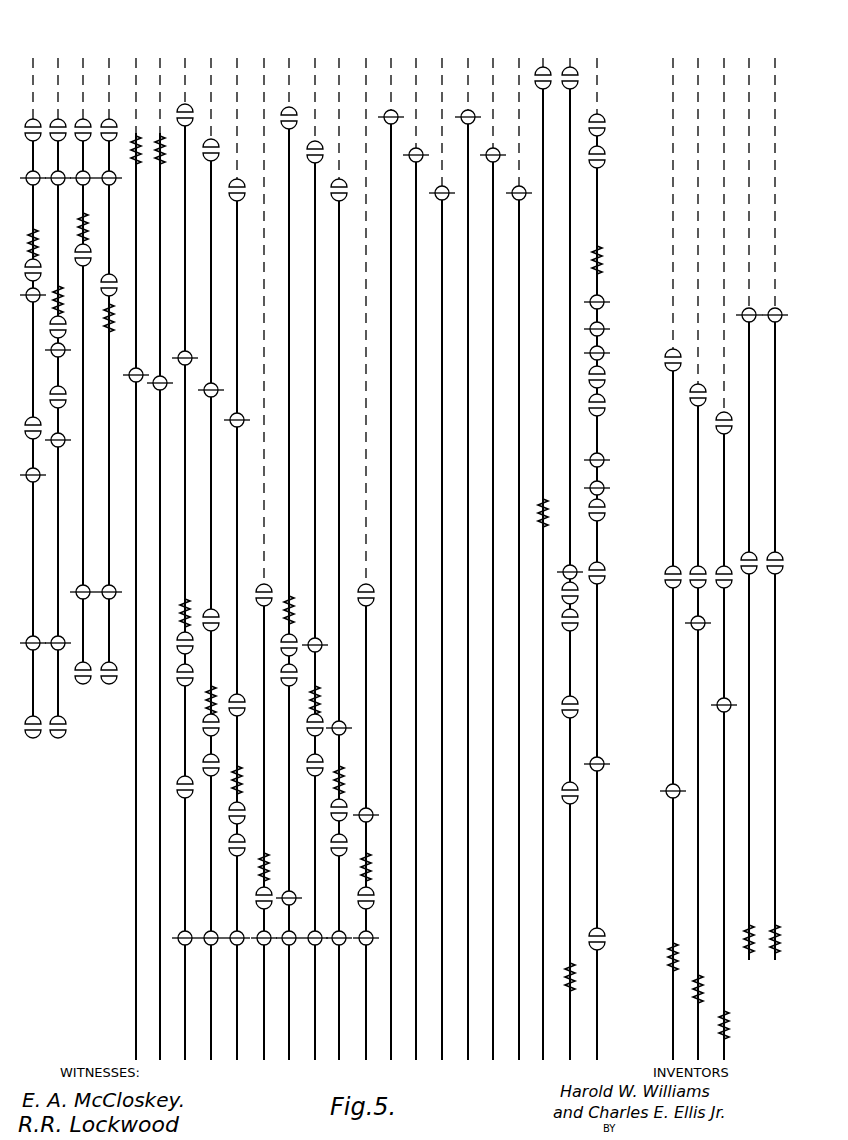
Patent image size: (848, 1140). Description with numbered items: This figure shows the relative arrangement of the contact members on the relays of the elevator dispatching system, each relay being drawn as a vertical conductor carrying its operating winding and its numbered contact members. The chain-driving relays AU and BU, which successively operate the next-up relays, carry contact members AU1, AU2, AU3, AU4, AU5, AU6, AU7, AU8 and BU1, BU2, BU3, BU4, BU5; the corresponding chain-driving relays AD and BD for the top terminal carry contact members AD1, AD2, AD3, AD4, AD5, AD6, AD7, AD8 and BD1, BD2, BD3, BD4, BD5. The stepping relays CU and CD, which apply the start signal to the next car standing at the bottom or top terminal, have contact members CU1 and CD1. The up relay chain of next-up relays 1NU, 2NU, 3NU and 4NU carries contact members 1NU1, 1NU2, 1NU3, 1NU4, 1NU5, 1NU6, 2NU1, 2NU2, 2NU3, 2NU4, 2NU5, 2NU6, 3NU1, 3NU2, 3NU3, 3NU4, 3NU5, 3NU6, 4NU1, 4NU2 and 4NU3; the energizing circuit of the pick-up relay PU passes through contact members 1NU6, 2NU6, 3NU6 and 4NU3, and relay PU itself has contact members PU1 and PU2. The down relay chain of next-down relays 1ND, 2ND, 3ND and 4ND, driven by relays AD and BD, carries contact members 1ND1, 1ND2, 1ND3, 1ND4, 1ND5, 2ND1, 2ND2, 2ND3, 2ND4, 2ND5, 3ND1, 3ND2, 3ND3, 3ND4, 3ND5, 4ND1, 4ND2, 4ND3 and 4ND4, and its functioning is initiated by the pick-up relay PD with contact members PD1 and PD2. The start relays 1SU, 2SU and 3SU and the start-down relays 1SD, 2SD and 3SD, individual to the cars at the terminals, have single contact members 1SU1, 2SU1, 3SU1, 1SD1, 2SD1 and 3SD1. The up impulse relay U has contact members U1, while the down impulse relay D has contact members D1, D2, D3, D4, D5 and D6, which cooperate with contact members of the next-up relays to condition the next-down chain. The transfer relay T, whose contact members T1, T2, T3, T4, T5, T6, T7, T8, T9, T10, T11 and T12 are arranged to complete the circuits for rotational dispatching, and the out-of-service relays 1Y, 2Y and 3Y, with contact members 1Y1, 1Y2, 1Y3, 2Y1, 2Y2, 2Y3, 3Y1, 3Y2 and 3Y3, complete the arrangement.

The chain-driving relay AU is at (27, 380).
The chain-driving relay AD is at (53, 380).
The chain-driving relay BU is at (78, 353).
The chain-driving relay BD is at (103, 353).
The stepping relay CU is at (130, 541).
The stepping relay CD is at (154, 541).
The next-up relay 1NU is at (179, 536).
The next-up relay 2NU is at (205, 536).
The next-up relay 3NU is at (231, 536).
The next-up relay 4NU is at (258, 536).
The next-down relay 1ND is at (283, 536).
The next-down relay 2ND is at (310, 536).
The next-down relay 3ND is at (334, 536).
The next-down relay 4ND is at (361, 536).
The start relay 1SU is at (385, 537).
The start relay 2SU is at (410, 537).
The start relay 3SU is at (436, 537).
The start-down relay 1SD is at (462, 536).
The start-down relay 2SD is at (487, 536).
The start-down relay 3SD is at (513, 536).
The up impulse relay U is at (536, 546).
The down impulse relay D is at (564, 546).
The transfer relay T is at (591, 546).
The out-of-service relay 1Y is at (667, 541).
The out-of-service relay 2Y is at (692, 541).
The out-of-service relay 3Y is at (718, 541).
The pick-up relay PU is at (743, 492).
The pick-up relay PD is at (769, 491).
The contact members of chain-driving relay AU AU1 is at (25, 123).
The contact members of chain-driving relay AU AU2 is at (27, 173).
The contact members of chain-driving relay AU AU3 is at (25, 273).
The contact members of chain-driving relay AU AU4 is at (27, 307).
The contact members of chain-driving relay AU AU5 is at (25, 424).
The contact members of chain-driving relay AU AU6 is at (27, 469).
The contact members of chain-driving relay AU AU7 is at (27, 636).
The contact members of chain-driving relay AU AU8 is at (25, 723).
The contact members of chain-driving relay AD AD1 is at (50, 124).
The contact members of chain-driving relay AD AD2 is at (52, 187).
The contact members of chain-driving relay AD AD3 is at (61, 322).
The contact members of chain-driving relay AD AD4 is at (52, 345).
The contact members of chain-driving relay AD AD5 is at (50, 397).
The contact members of chain-driving relay AD AD6 is at (52, 450).
The contact members of chain-driving relay AD AD7 is at (52, 632).
The contact members of chain-driving relay AD AD8 is at (50, 722).
The contact members of chain-driving relay BU BU1 is at (75, 123).
The contact members of chain-driving relay BU BU2 is at (77, 180).
The contact members of chain-driving relay BU BU3 is at (75, 259).
The contact members of chain-driving relay BU BU4 is at (77, 590).
The contact members of chain-driving relay BU BU5 is at (75, 670).
The contact members of chain-driving relay BD BD1 is at (101, 121).
The contact members of chain-driving relay BD BD2 is at (103, 187).
The contact members of chain-driving relay BD BD3 is at (101, 281).
The contact members of chain-driving relay BD BD4 is at (103, 589).
The contact members of chain-driving relay BD BD5 is at (101, 670).
The contact members of stepping relay CU CU1 is at (130, 390).
The contact members of stepping relay CD CD1 is at (154, 365).
The contact members of next-up relay 1NU 1NU1 is at (177, 101).
The contact members of next-up relay 1NU 1NU2 is at (179, 341).
The contact members of next-up relay 1NU 1NU3 is at (177, 645).
The contact members of next-up relay 1NU 1NU4 is at (177, 691).
The contact members of next-up relay 1NU 1NU5 is at (177, 785).
The contact members No. 6 of next-up relay 1NU 1NU6 is at (179, 923).
The contact members of next-up relay 2NU 2NU1 is at (203, 155).
The contact members of next-up relay 2NU 2NU2 is at (205, 405).
The contact members of next-up relay 2NU 2NU3 is at (203, 604).
The contact members of next-up relay 2NU 2NU4 is at (203, 735).
The contact members of next-up relay 2NU 2NU5 is at (203, 778).
The contact members No. 6 of next-up relay 2NU 2NU6 is at (205, 921).
The contact members of next-up relay 3NU 3NU1 is at (229, 185).
The contact members of next-up relay 3NU 3NU2 is at (231, 435).
The contact members of next-up relay 3NU 3NU3 is at (229, 694).
The contact members of next-up relay 3NU 3NU4 is at (229, 805).
The contact members of next-up relay 3NU 3NU5 is at (229, 861).
The contact members No. 6 of next-up relay 3NU 3NU6 is at (231, 954).
The contact members of next-up relay 4NU 4NU1 is at (256, 590).
The contact members of next-up relay 4NU 4NU2 is at (256, 895).
The contact members No. 3 of next-up relay 4NU 4NU3 is at (258, 957).
The contact members of next-down relay 1ND 1ND1 is at (281, 110).
The contact members of next-down relay 1ND 1ND2 is at (281, 645).
The contact members of next-down relay 1ND 1ND3 is at (281, 691).
The contact members of next-down relay 1ND 1ND4 is at (283, 883).
The contact members of next-down relay 1ND 1ND5 is at (283, 957).
The contact members of next-down relay 2ND 2ND1 is at (307, 155).
The contact members of next-down relay 2ND 2ND2 is at (316, 629).
The contact members of next-down relay 2ND 2ND3 is at (307, 735).
The contact members of next-down relay 2ND 2ND4 is at (307, 778).
The contact members of next-down relay 2ND 2ND5 is at (309, 957).
The contact members of next-down relay 3ND 3ND1 is at (331, 195).
The contact members of next-down relay 3ND 3ND2 is at (333, 743).
The contact members of next-down relay 3ND 3ND3 is at (331, 810).
The contact members of next-down relay 3ND 3ND4 is at (331, 858).
The contact members of next-down relay 3ND 3ND5 is at (333, 957).
The contact members of next-down relay 4ND 4ND1 is at (358, 584).
The contact members of next-down relay 4ND 4ND2 is at (367, 797).
The contact members of next-down relay 4ND 4ND3 is at (369, 905).
The contact members of next-down relay 4ND 4ND4 is at (360, 957).
The contact members of start relay 1SU 1SU1 is at (385, 136).
The contact members of start relay 2SU 2SU1 is at (410, 172).
The contact members of start relay 3SU 3SU1 is at (436, 209).
The contact members of start-down relay 1SD 1SD1 is at (462, 133).
The contact members of start-down relay 2SD 2SD1 is at (487, 172).
The contact members of start-down relay 3SD 3SD1 is at (513, 209).
The contact members of up impulse relay U U1 is at (535, 88).
The contact members of down impulse relay D D1 is at (562, 90).
The contact members of down impulse relay D D2 is at (564, 562).
The contact members of down impulse relay D D3 is at (562, 590).
The contact members of down impulse relay D D4 is at (562, 621).
The contact members of down impulse relay D D5 is at (562, 704).
The contact members of down impulse relay D D6 is at (562, 790).
The contact members of transfer relay T T1 is at (589, 139).
The contact members of transfer relay T T2 is at (591, 295).
The contact members of transfer relay T T3 is at (591, 323).
The contact members of transfer relay T T4 is at (591, 348).
The contact members of transfer relay T T5 is at (589, 376).
The contact members of transfer relay T T6 is at (589, 405).
The contact members of transfer relay T T7 is at (591, 456).
The contact members of transfer relay T T8 is at (591, 486).
The contact members of transfer relay T T9 is at (589, 513).
The contact members of transfer relay T T10 is at (589, 579).
The contact members of transfer relay T T11 is at (591, 757).
The contact members of transfer relay T T12 is at (589, 934).
The contact members of out-of-service relay 1Y 1Y1 is at (665, 357).
The contact members of out-of-service relay 1Y 1Y2 is at (665, 579).
The contact members of out-of-service relay 1Y 1Y3 is at (667, 798).
The contact members of out-of-service relay 2Y 2Y1 is at (690, 405).
The contact members of out-of-service relay 2Y 2Y2 is at (690, 573).
The contact members of out-of-service relay 2Y 2Y3 is at (692, 636).
The contact members of out-of-service relay 3Y 3Y1 is at (716, 434).
The contact members of out-of-service relay 3Y 3Y2 is at (716, 575).
The contact members of out-of-service relay 3Y 3Y3 is at (718, 720).
The contact members of pick-up relay PU PU1 is at (743, 330).
The contact members of pick-up relay PU PU2 is at (741, 550).
The contact members of pick-up relay PD PD1 is at (769, 330).
The contact members of pick-up relay PD PD2 is at (767, 550).